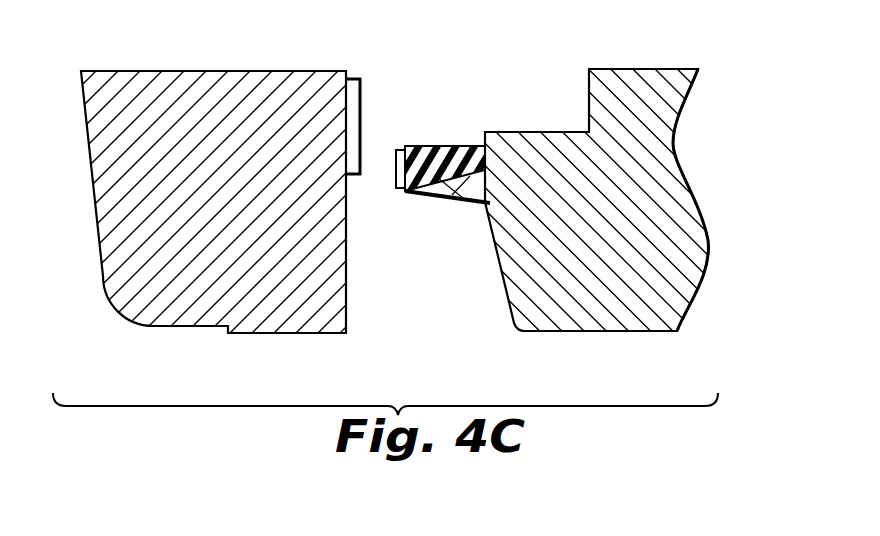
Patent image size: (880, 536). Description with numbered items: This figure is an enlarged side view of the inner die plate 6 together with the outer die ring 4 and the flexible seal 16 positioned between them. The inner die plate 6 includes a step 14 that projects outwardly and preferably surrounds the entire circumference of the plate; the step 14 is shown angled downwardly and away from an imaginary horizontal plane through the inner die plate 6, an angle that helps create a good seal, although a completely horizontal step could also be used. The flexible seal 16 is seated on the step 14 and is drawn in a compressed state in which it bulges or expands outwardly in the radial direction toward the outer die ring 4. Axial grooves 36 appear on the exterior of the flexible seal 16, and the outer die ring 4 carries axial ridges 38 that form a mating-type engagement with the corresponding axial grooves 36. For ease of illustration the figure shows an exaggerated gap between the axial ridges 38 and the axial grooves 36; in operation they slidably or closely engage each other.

The outer die ring 4 is at (181, 101).
The axial ridges 38 is at (353, 80).
The inner die plate 6 is at (653, 97).
The flexible seal 16 is at (434, 146).
The axial grooves 36 is at (395, 176).
The step 14 is at (452, 198).